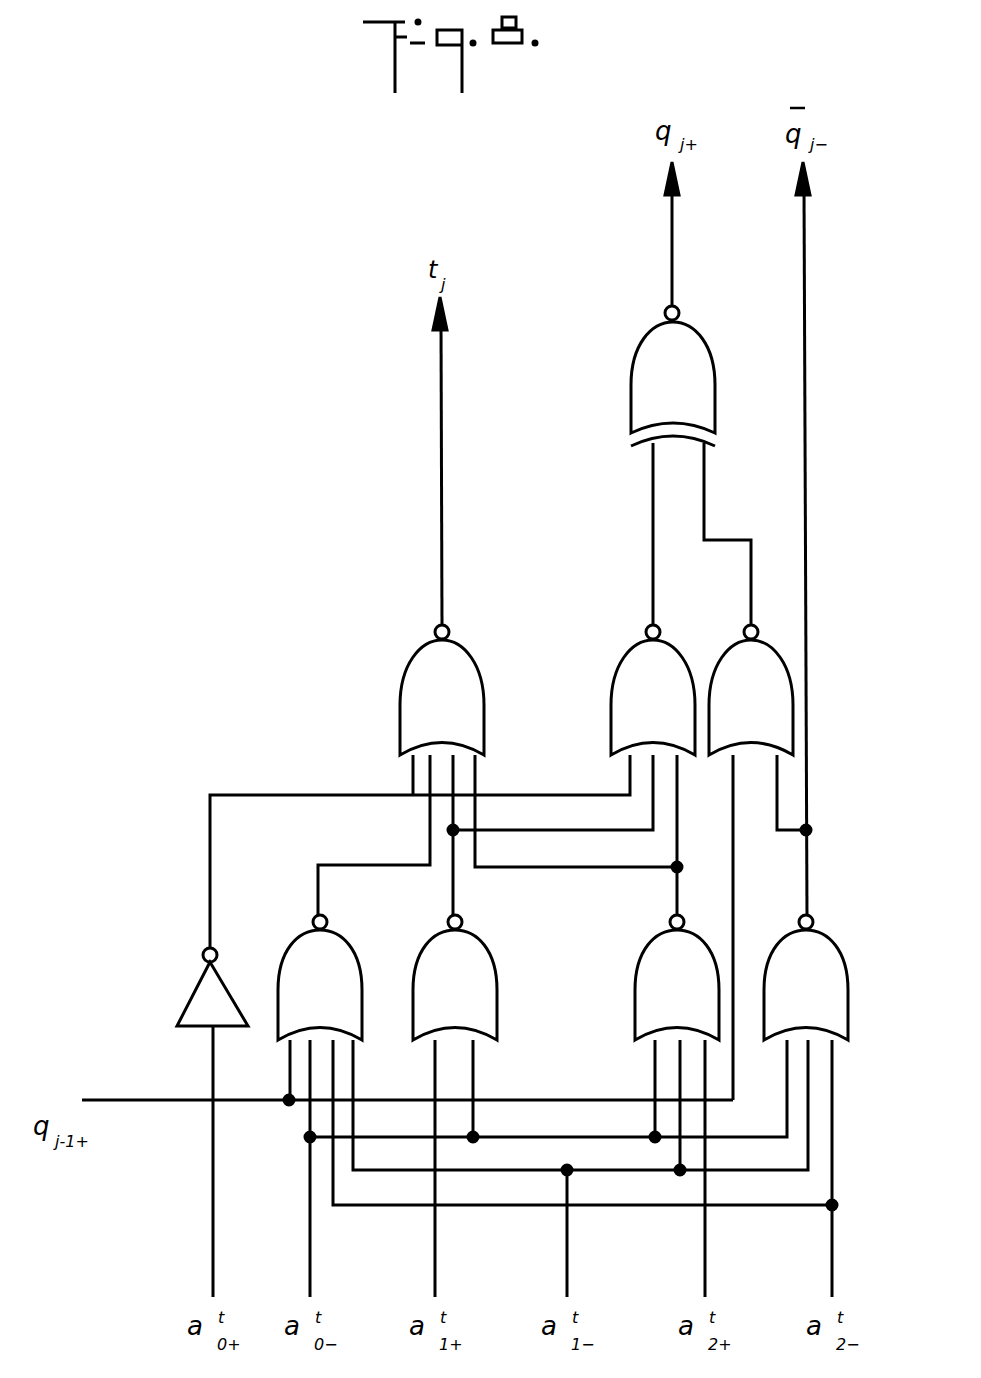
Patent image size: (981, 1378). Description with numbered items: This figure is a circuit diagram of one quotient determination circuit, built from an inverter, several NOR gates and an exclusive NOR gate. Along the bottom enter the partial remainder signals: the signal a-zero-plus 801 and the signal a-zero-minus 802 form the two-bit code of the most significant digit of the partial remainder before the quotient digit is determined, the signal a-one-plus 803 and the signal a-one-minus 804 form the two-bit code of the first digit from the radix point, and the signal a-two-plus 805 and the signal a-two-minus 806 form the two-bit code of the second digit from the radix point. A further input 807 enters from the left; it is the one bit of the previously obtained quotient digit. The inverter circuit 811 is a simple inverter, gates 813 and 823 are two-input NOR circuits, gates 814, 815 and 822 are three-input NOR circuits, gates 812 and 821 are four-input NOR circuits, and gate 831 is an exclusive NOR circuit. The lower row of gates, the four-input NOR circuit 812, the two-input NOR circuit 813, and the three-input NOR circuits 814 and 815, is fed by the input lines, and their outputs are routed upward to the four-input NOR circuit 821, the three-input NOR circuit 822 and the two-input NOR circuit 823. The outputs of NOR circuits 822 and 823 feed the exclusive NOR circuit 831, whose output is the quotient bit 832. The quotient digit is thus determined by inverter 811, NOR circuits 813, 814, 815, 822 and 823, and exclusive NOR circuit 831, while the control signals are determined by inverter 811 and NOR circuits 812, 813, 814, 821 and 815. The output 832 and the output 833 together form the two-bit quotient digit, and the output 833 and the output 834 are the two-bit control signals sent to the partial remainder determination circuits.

The signal a0+j 801 is at (213, 1267).
The signal a0-j 802 is at (310, 1267).
The signal a1+j 803 is at (435, 1267).
The signal a1-j 804 is at (567, 1267).
The signal a2+j 805 is at (705, 1270).
The signal a2-j 806 is at (832, 1270).
The input qj-1+ 807 is at (148, 1103).
The inverter circuit 811 is at (202, 978).
The four-input NOR circuit 812 is at (342, 967).
The two-input NOR circuit 813 is at (480, 970).
The three-input NOR circuit 814 is at (652, 960).
The three-input NOR circuit 815 is at (823, 970).
The four-input NOR circuit 821 is at (473, 668).
The three-input NOR circuit 822 is at (632, 665).
The two-input NOR circuit 823 is at (733, 665).
The exclusive NOR circuit 831 is at (712, 358).
The output qj+ 832 is at (675, 212).
The output qj- 833 is at (806, 218).
The output tj 834 is at (443, 347).